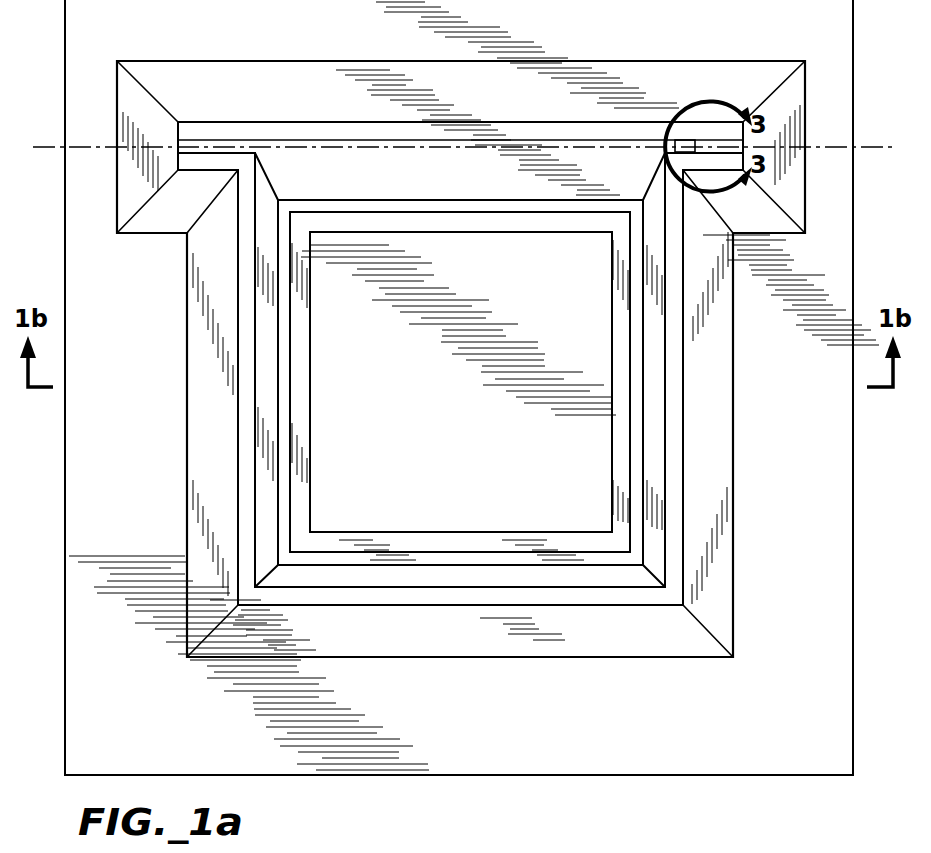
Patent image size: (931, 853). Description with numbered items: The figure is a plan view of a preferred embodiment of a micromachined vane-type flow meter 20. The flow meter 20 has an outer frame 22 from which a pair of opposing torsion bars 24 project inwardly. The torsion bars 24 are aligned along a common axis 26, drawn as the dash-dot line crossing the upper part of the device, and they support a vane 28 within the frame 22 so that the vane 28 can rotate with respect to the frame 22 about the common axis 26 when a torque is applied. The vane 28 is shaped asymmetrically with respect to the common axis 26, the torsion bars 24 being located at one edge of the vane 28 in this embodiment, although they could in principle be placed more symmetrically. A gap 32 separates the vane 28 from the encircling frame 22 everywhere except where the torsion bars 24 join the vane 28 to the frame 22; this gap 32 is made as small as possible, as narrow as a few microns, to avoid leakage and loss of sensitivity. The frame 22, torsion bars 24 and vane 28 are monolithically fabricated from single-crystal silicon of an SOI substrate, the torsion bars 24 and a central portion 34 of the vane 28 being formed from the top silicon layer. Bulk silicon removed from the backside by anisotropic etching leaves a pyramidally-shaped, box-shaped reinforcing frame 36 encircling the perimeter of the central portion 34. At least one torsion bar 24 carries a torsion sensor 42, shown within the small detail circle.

The flow meter 20 is at (366, 801).
The outer frame 22 is at (77, 492).
The torsion bars 24 is at (242, 140).
The common axis 26 is at (60, 146).
The vane 28 is at (471, 280).
The gap 32 is at (228, 132).
The central portion 34 is at (471, 445).
The reinforcing frame 36 is at (452, 562).
The torsion sensor 42 is at (685, 140).